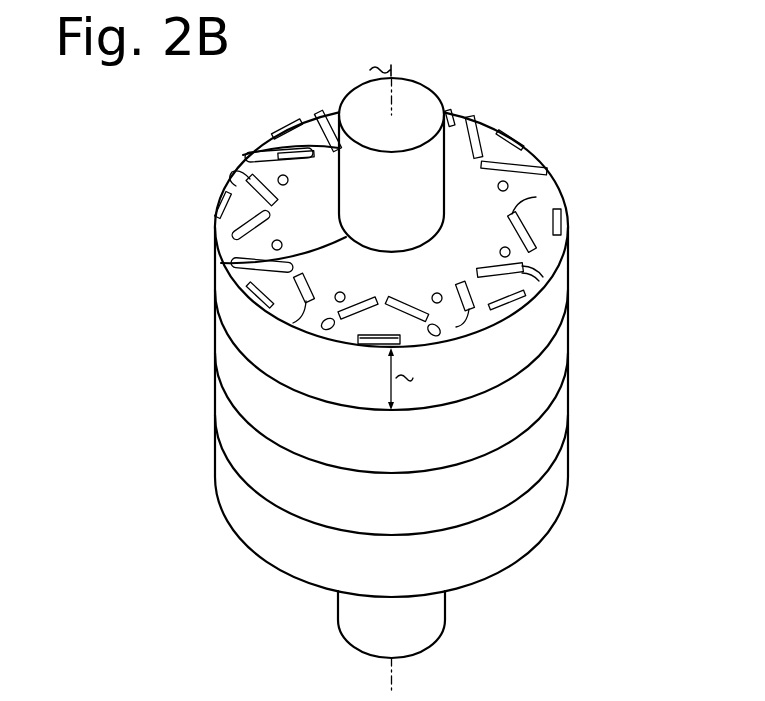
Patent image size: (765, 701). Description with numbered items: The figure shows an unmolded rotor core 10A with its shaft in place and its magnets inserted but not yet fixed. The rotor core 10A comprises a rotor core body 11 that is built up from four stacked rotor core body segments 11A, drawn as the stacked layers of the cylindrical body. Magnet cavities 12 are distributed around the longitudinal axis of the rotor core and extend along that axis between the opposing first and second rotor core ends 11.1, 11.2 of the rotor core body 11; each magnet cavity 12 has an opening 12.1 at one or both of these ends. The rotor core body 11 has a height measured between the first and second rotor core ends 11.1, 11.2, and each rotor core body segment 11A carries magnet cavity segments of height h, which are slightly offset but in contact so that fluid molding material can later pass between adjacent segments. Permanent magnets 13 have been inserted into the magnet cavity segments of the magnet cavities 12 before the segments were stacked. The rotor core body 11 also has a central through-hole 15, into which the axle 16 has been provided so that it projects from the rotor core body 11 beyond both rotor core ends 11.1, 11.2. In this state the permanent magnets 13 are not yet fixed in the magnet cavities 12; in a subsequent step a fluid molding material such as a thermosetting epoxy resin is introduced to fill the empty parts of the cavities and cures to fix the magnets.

The rotor core 10A is at (568, 108).
The rotor core body 11 is at (225, 412).
The rotor core body segment 11A is at (560, 308).
The first rotor core end 11.1 is at (188, 534).
The second rotor core end 11.2 is at (297, 206).
The magnet cavity 12 is at (548, 258).
The opening 12.1 is at (290, 312).
The permanent magnet 13 is at (528, 197).
The central through-hole 15 is at (246, 252).
The axle 16 is at (353, 165).